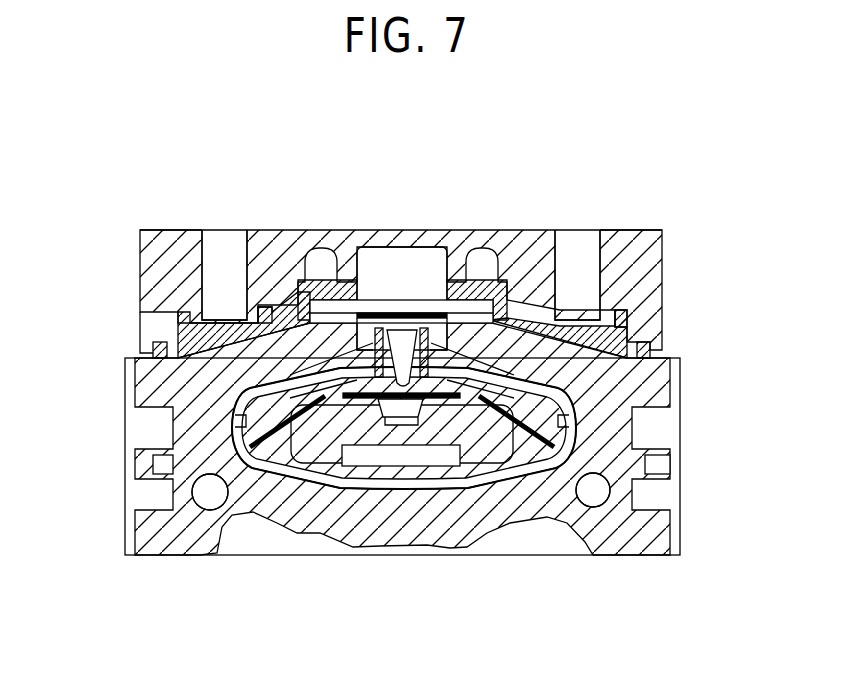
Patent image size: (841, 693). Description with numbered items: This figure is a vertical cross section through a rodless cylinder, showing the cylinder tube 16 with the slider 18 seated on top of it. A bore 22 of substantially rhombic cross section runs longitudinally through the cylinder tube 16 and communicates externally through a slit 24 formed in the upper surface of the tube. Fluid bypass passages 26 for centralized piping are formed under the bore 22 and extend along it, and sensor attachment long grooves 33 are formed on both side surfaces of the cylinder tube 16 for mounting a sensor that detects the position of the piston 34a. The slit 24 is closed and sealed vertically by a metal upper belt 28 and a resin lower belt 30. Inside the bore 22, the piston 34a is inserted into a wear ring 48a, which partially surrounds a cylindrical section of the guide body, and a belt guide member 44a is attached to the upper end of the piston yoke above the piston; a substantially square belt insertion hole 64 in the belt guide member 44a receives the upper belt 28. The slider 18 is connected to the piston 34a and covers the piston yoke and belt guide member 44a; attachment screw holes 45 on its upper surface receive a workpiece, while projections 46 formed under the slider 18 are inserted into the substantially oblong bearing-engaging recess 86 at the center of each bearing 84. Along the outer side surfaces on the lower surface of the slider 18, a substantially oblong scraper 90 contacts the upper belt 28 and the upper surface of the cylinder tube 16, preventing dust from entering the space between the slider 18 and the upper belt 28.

The cylinder tube 16 is at (415, 535).
The slider 18 is at (664, 242).
The bore 22 is at (237, 457).
The slit 24 is at (397, 347).
The fluid bypass passage 26 is at (200, 497).
The upper belt 28 is at (445, 300).
The lower belt 30 is at (492, 477).
The sensor attachment long groove 33 is at (173, 426).
The piston 34a is at (320, 445).
The belt guide member 44a is at (330, 300).
The attachment screw hole 45 is at (220, 240).
The projection 46 is at (202, 273).
The wear ring 48a is at (267, 437).
The belt insertion hole 64 is at (412, 278).
The bearing 84 is at (180, 320).
The bearing-engaging recess 86 is at (272, 310).
The scraper 90 is at (152, 352).